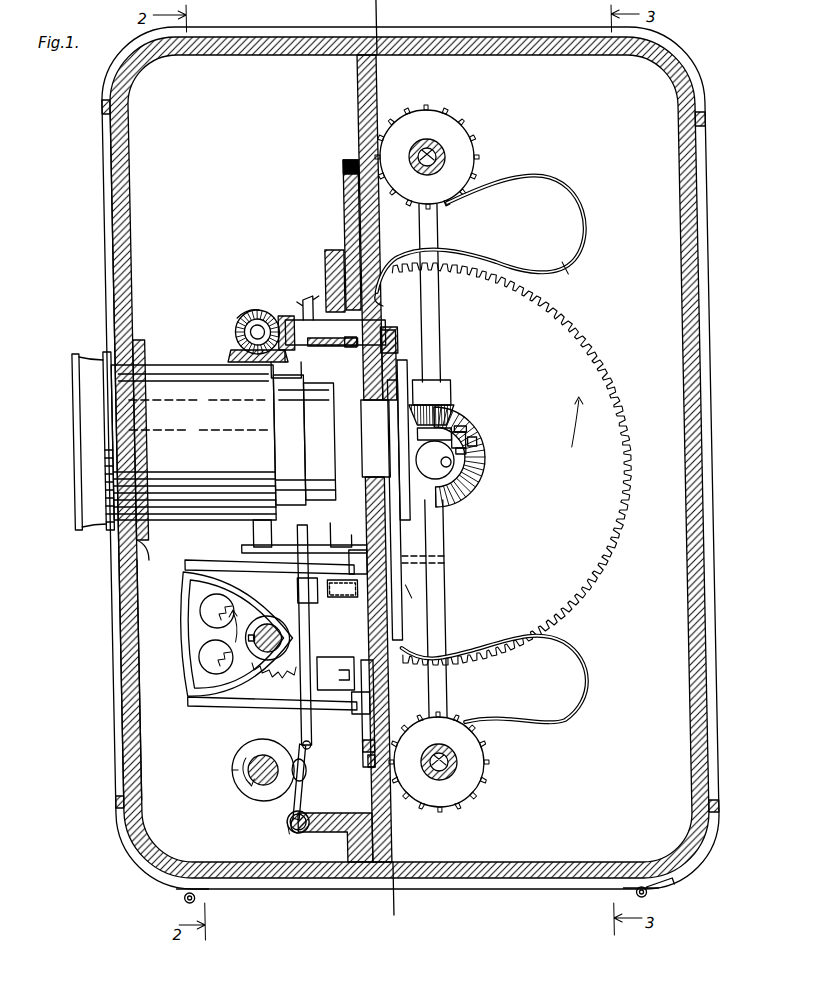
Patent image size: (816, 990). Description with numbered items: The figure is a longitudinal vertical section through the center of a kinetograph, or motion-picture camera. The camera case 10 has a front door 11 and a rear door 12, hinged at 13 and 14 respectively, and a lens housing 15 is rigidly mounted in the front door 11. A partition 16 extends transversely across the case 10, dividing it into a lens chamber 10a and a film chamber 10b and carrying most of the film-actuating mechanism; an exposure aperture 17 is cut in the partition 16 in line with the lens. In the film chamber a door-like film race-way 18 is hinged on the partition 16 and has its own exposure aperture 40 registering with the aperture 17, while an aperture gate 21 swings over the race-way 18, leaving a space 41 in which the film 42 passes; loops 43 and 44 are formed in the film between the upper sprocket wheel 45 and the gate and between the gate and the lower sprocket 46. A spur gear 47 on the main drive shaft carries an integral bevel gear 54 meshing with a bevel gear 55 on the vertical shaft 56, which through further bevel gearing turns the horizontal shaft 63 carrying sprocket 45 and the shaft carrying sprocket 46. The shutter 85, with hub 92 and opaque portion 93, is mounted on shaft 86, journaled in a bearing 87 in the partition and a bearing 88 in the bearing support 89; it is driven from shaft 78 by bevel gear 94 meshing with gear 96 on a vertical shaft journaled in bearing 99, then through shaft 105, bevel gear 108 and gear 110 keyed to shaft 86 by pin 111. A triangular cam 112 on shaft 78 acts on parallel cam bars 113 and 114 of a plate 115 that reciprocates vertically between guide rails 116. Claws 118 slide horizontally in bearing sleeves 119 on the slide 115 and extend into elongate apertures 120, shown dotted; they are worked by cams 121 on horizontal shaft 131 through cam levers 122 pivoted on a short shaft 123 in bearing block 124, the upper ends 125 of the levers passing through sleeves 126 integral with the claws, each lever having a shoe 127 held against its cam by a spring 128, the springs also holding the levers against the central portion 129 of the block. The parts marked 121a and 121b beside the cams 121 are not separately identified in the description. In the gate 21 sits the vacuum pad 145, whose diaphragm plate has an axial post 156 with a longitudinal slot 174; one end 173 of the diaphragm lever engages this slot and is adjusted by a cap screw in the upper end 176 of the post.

The camera case 10 is at (314, 880).
The lens chamber 10a is at (220, 208).
The film chamber 10b is at (624, 134).
The front door 11 is at (118, 712).
The rear door 12 is at (713, 674).
The hinge 13 is at (176, 901).
The hinge 14 is at (640, 893).
The lens housing 15 is at (106, 528).
The partition 16 is at (365, 112).
The exposure aperture 17 is at (376, 438).
The film race-way 18 is at (398, 352).
The aperture gate 21 is at (452, 762).
The exposure aperture 40 is at (422, 466).
The space 41 is at (412, 596).
The film 42 is at (570, 266).
The loop 43 is at (585, 228).
The loop 44 is at (584, 680).
The upper sprocket wheel 45 is at (484, 156).
The lower sprocket 46 is at (470, 782).
The spur gear 47 is at (598, 352).
The bevel gear 54 is at (453, 434).
The bevel gear 55 is at (456, 410).
The vertical shaft 56 is at (443, 240).
The horizontal shaft 63 is at (440, 150).
The shaft 78 is at (260, 652).
The shutter 85 is at (343, 205).
The shaft 86 is at (310, 302).
The bearing 87 is at (387, 298).
The bearing 88 is at (322, 346).
The bearing support 89 is at (329, 257).
The hub 92 is at (347, 344).
The opaque portion 93 is at (349, 215).
The beveled gear 94 is at (300, 664).
The beveled gear 96 is at (229, 634).
The bearing 99 is at (272, 548).
The horizontal shaft 105 is at (238, 331).
The bevel gear 108 is at (248, 316).
The bevel gear 110 is at (284, 316).
The pin 111 is at (290, 364).
The triangular cam 112 is at (182, 672).
The cam bar 113 is at (215, 708).
The cam bar 114 is at (216, 563).
The plate 115 is at (362, 762).
The guide rails 116 is at (357, 746).
The claws 118 is at (312, 578).
The bearing sleeves 119 is at (336, 598).
The elongate vertical apertures 120 is at (448, 556).
The cams 121 is at (240, 790).
The cam surface 121a is at (227, 773).
The push rod 121b is at (300, 702).
The cam levers 122 is at (306, 745).
The short horizontal shaft 123 is at (288, 832).
The bearing block 124 is at (330, 832).
The upper ends 125 is at (467, 436).
The sleeves 126 is at (252, 634).
The shoe 127 is at (298, 782).
The springs 128 is at (284, 820).
The central portion 129 is at (282, 830).
The horizontal shaft 131 is at (267, 761).
The vacuum pad 145 is at (487, 478).
The post 156 is at (467, 428).
The end of rocker arm 173 is at (452, 462).
The longitudinal slot 174 is at (467, 451).
The upper end 176 is at (478, 438).